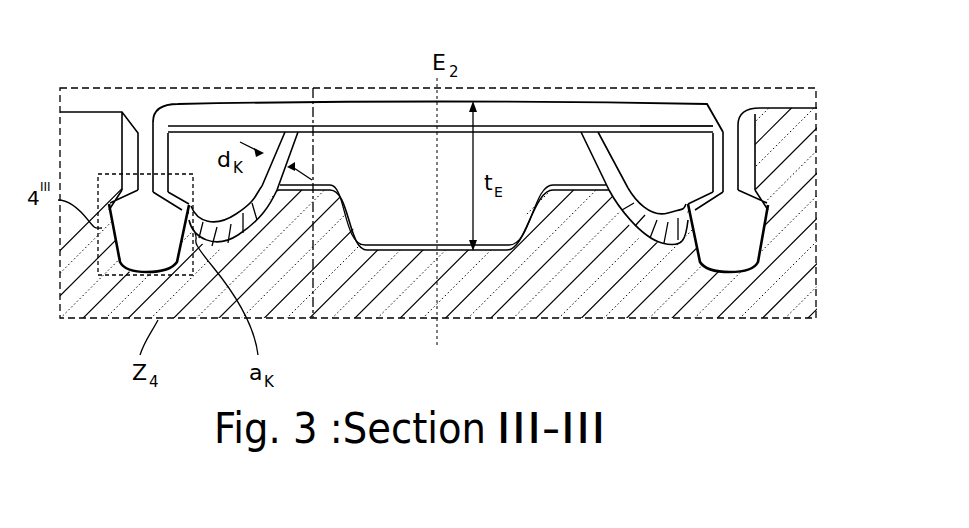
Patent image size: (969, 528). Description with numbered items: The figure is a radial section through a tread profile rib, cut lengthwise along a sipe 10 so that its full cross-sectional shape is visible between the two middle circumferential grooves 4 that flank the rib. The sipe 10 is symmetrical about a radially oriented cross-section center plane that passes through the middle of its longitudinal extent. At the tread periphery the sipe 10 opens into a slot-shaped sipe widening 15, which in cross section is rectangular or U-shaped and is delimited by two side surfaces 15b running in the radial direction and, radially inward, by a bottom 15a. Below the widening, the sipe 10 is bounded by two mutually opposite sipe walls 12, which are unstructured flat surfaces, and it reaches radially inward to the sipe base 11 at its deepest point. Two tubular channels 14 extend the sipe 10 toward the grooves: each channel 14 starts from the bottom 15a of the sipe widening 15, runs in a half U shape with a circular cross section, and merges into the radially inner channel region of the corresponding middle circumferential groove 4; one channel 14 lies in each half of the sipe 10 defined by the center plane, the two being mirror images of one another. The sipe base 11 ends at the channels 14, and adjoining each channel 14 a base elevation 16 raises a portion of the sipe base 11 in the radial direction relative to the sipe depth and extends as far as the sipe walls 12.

The middle circumferential groove 4 is at (151, 86).
The sipe 10 is at (438, 136).
The sipe base 11 is at (453, 250).
The sipe wall 12 is at (358, 143).
The tubular channel 14 is at (303, 125).
The sipe widening 15 is at (519, 98).
The bottom of the sipe widening 15a is at (660, 120).
The side surface of the sipe widening 15b is at (600, 104).
The base elevation 16 is at (327, 218).